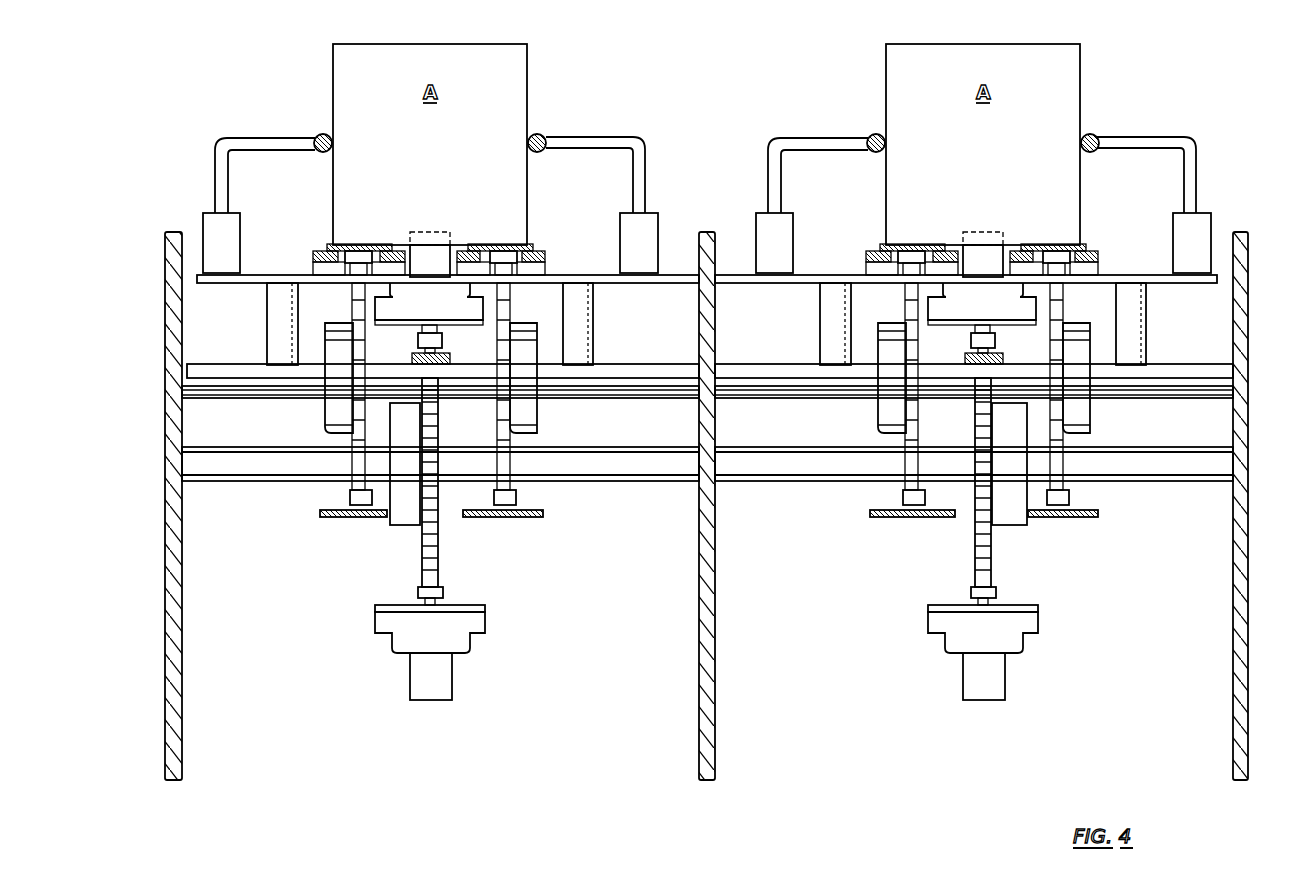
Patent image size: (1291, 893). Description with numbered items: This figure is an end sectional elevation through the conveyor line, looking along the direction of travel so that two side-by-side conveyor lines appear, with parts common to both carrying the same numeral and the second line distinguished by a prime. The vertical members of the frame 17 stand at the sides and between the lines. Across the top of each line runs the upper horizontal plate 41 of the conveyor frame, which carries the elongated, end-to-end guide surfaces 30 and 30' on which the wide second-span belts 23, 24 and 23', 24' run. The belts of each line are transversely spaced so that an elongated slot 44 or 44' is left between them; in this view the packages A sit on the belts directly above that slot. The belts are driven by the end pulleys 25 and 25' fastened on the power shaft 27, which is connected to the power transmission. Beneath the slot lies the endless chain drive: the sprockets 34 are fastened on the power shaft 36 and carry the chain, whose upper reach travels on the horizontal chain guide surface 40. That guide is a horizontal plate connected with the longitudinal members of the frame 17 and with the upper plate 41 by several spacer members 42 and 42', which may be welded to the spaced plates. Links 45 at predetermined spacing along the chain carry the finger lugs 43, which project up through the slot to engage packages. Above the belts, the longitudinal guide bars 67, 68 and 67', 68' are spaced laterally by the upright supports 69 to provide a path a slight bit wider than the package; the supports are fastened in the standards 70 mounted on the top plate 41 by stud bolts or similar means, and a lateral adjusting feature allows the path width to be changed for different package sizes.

The frame 17 is at (182, 725).
The belt conveyor 23 is at (912, 380).
The belt conveyor 23' is at (353, 380).
The belt conveyor 24 is at (1063, 380).
The belt conveyor 24' is at (505, 380).
The end pulley 25 is at (985, 380).
The end pulley 25' is at (427, 421).
The power shaft 27 is at (243, 388).
The guide surface 30 is at (986, 228).
The guide surface 30' is at (433, 251).
The end sprocket 34 is at (1005, 482).
The power shaft 36 is at (607, 465).
The chain guide surface 40 is at (465, 375).
The upper horizontal plate 41 is at (218, 283).
The spacer member 42 is at (983, 324).
The spacer member 42' is at (431, 324).
The finger lug 43 is at (991, 654).
The slot 44 is at (993, 238).
The slot 44' is at (424, 240).
The link 45 is at (1005, 465).
The longitudinal guide bar 67 is at (1104, 124).
The longitudinal guide bar 67' is at (553, 124).
The longitudinal guide bar 68 is at (862, 125).
The longitudinal guide bar 68' is at (308, 125).
The upright support 69 is at (218, 146).
The standard 70 is at (231, 252).